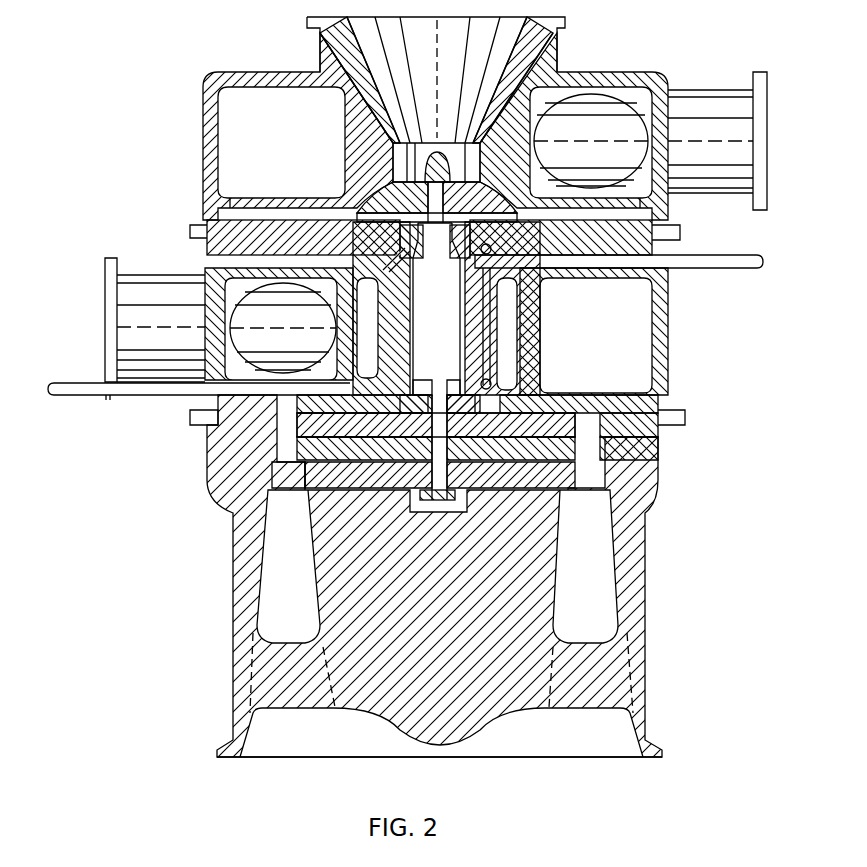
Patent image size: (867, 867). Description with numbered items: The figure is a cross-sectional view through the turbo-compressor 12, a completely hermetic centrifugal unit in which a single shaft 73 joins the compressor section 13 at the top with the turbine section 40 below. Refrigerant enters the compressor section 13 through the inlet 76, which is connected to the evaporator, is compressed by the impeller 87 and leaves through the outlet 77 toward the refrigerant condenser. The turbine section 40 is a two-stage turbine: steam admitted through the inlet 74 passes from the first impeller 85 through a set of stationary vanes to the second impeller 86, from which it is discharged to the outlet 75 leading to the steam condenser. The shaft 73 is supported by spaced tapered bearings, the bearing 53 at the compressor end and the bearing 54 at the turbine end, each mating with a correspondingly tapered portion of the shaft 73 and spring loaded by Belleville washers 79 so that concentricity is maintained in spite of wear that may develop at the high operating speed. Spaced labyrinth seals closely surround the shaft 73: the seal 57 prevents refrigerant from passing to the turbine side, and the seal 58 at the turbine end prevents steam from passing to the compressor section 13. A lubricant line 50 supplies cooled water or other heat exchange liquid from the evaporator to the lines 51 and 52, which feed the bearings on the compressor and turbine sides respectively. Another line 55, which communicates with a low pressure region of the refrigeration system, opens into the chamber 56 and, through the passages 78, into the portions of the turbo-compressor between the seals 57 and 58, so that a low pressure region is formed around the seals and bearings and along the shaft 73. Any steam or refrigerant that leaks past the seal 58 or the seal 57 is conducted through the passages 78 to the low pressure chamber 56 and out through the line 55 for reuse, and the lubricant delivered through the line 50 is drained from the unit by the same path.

The turbo-compressor 12 is at (227, 547).
The compressor section 13 is at (551, 285).
The turbine section 40 is at (596, 385).
The lubricant line 50 is at (733, 262).
The line 51 is at (485, 244).
The line 52 is at (488, 380).
The tapered bearing 53 is at (420, 252).
The bearing 54 is at (424, 386).
The line 55 is at (86, 396).
The chamber 56 is at (378, 344).
The labyrinth seal 57 is at (402, 237).
The labyrinth seal 58 is at (400, 398).
The shaft 73 is at (444, 344).
The inlet 74 is at (168, 284).
The outlet 75 is at (561, 742).
The inlet 76 is at (485, 28).
The outlet 77 is at (704, 183).
The passages 78 is at (386, 283).
The Belleville washers 79 is at (462, 225).
The first impeller 85 is at (288, 420).
The second impeller 86 is at (297, 483).
The impeller 87 is at (407, 207).